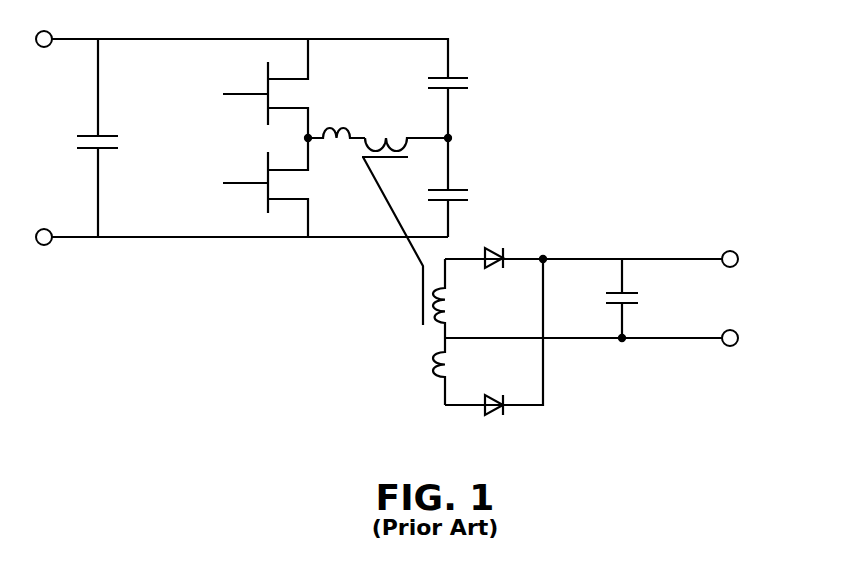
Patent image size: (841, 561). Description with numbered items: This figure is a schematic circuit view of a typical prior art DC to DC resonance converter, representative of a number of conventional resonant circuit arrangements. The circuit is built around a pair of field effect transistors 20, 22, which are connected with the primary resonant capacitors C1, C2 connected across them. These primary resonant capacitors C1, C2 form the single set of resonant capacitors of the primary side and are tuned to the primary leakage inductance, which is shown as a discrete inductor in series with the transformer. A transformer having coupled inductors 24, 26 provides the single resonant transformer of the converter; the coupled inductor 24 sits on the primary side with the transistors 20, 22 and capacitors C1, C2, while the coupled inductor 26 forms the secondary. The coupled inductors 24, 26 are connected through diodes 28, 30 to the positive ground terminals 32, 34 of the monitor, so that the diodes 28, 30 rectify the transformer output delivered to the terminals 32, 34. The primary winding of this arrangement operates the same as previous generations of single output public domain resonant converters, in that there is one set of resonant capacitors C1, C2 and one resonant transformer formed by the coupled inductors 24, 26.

The field effect transistor 20 is at (253, 92).
The field effect transistor 22 is at (253, 181).
The coupled inductor 24 is at (388, 138).
The coupled inductor 26 is at (431, 330).
The diode 28 is at (505, 250).
The diode 30 is at (492, 418).
The positive ground terminal 32 is at (737, 251).
The positive ground terminal 34 is at (737, 330).
The primary resonant capacitor C1 is at (466, 78).
The primary resonant capacitor C2 is at (462, 193).